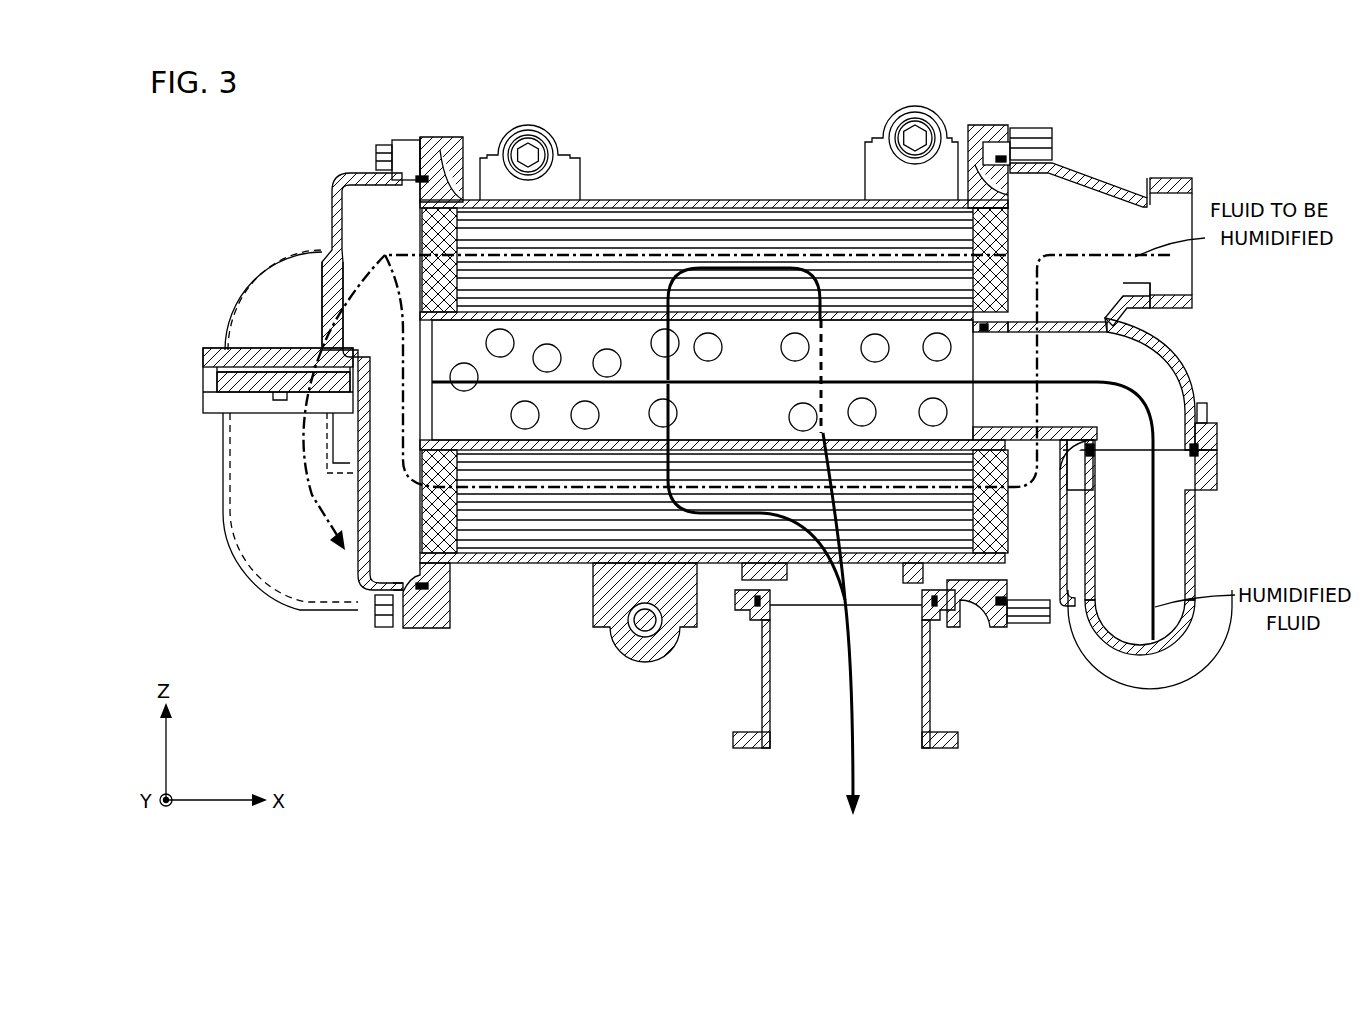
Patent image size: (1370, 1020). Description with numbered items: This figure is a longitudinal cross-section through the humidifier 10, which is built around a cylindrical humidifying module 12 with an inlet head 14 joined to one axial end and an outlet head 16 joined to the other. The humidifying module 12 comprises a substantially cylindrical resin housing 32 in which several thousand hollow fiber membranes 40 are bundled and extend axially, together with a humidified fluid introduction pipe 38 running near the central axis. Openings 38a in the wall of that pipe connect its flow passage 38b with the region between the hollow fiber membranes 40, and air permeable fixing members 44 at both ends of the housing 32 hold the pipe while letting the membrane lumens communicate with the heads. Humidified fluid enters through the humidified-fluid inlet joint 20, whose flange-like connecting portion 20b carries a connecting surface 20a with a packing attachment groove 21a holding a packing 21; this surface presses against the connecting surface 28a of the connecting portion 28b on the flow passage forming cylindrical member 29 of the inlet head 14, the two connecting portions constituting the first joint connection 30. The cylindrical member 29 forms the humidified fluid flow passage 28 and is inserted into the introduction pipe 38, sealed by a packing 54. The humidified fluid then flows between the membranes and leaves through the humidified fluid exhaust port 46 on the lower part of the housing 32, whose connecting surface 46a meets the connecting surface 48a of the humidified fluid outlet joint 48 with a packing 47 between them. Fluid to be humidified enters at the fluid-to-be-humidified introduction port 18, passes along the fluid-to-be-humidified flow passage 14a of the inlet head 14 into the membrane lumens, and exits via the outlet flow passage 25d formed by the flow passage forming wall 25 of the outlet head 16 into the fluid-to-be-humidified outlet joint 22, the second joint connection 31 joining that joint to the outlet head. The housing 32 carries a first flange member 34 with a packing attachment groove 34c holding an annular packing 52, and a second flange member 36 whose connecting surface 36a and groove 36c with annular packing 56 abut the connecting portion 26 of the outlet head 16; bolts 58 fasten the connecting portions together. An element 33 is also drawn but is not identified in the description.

The humidifier 10 is at (182, 196).
The humidifying module 12 is at (599, 190).
The inlet head 14 is at (1105, 180).
The fluid-to-be-humidified flow passage 14a is at (1040, 630).
The outlet head 16 is at (330, 184).
The fluid-to-be-humidified introduction port 18 is at (1170, 183).
The humidified-fluid inlet joint 20 is at (1195, 543).
The connecting surface 20a is at (1185, 438).
The connecting portion 20b is at (1212, 490).
The packing 21 is at (1200, 452).
The packing attachment groove 21a is at (1093, 460).
The fluid-to-be-humidified outlet joint 22 is at (240, 489).
The flow passage forming wall 25 is at (250, 290).
The outlet flow passage 25d is at (342, 242).
The connecting portion 26 is at (437, 628).
The humidified fluid flow passage 28 is at (1053, 338).
The connecting surface 28a is at (1212, 465).
The connecting portion 28b is at (1212, 438).
The flow passage forming cylindrical member 29 is at (1085, 333).
The first joint connection 30 is at (1290, 425).
The second joint connection 31 is at (185, 352).
The housing 32 is at (750, 203).
The bolt boss 33 is at (726, 592).
The first flange member 34 is at (990, 160).
The packing attachment groove 34c is at (1003, 163).
The second flange member 36 is at (428, 160).
The outlet head connecting surface 36a is at (418, 178).
The packing attachment groove 36c is at (420, 585).
The humidified fluid introduction pipe 38 is at (848, 305).
The openings 38a is at (690, 411).
The flow passage 38b is at (720, 333).
The hollow fiber membranes 40 is at (686, 244).
The air permeable fixing members 44 is at (422, 222).
The humidified fluid exhaust port 46 is at (945, 603).
The connecting surface 46a is at (995, 608).
The packing 47 is at (770, 610).
The humidified fluid outlet joint 48 is at (760, 703).
The connecting surface 48a is at (770, 604).
The annular packing 52 is at (1052, 142).
The packing 54 is at (990, 338).
The annular packing 56 is at (445, 607).
The bolts 58 is at (378, 150).